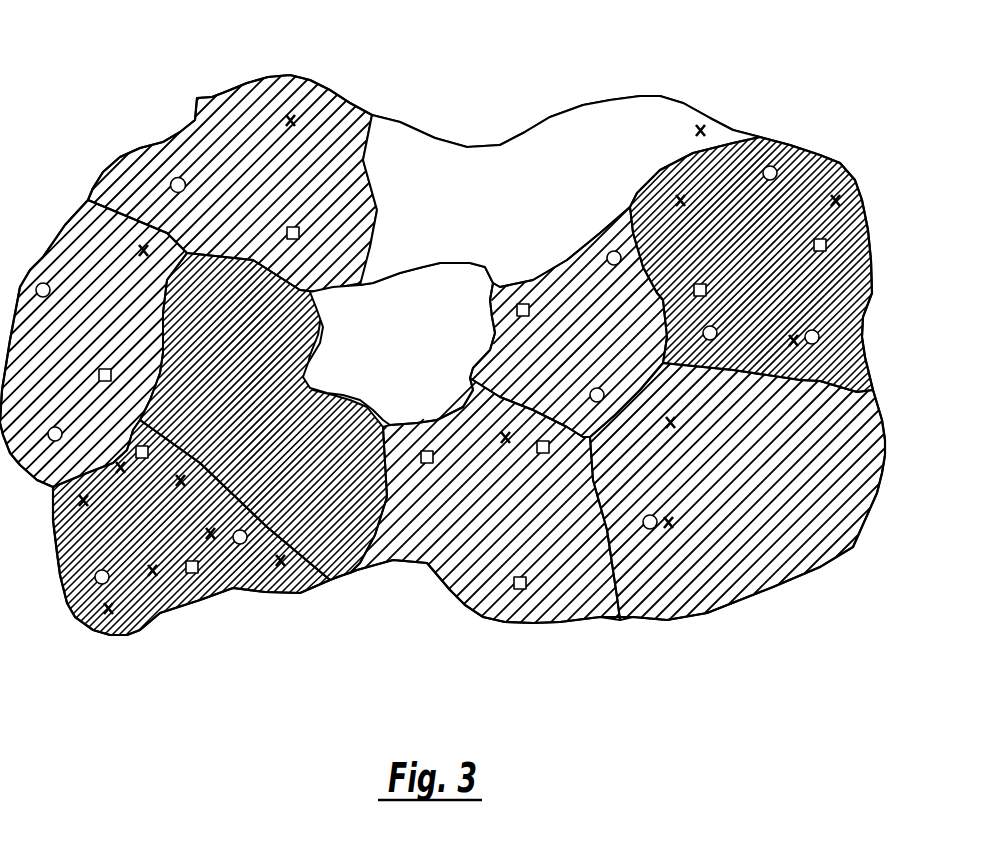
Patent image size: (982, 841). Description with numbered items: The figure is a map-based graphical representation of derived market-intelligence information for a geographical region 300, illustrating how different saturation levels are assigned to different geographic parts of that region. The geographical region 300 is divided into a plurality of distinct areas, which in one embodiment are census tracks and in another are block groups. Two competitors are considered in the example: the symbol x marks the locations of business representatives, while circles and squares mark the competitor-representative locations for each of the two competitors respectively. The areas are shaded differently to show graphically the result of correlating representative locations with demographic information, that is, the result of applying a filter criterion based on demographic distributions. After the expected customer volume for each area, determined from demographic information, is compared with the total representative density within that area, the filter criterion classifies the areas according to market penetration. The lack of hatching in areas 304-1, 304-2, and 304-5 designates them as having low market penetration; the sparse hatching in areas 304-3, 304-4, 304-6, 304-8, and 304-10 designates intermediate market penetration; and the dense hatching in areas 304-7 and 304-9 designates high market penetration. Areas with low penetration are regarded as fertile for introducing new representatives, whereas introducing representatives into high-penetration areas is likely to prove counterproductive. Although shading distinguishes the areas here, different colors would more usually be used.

The geographical region 300 is at (674, 80).
The area 304-1 is at (431, 356).
The area 304-2 is at (518, 206).
The area 304-3 is at (611, 351).
The area 304-4 is at (513, 514).
The area 304-5 is at (286, 432).
The area 304-6 is at (281, 199).
The area 304-7 is at (779, 264).
The area 304-8 is at (759, 486).
The area 304-9 is at (183, 544).
The area 304-10 is at (129, 344).